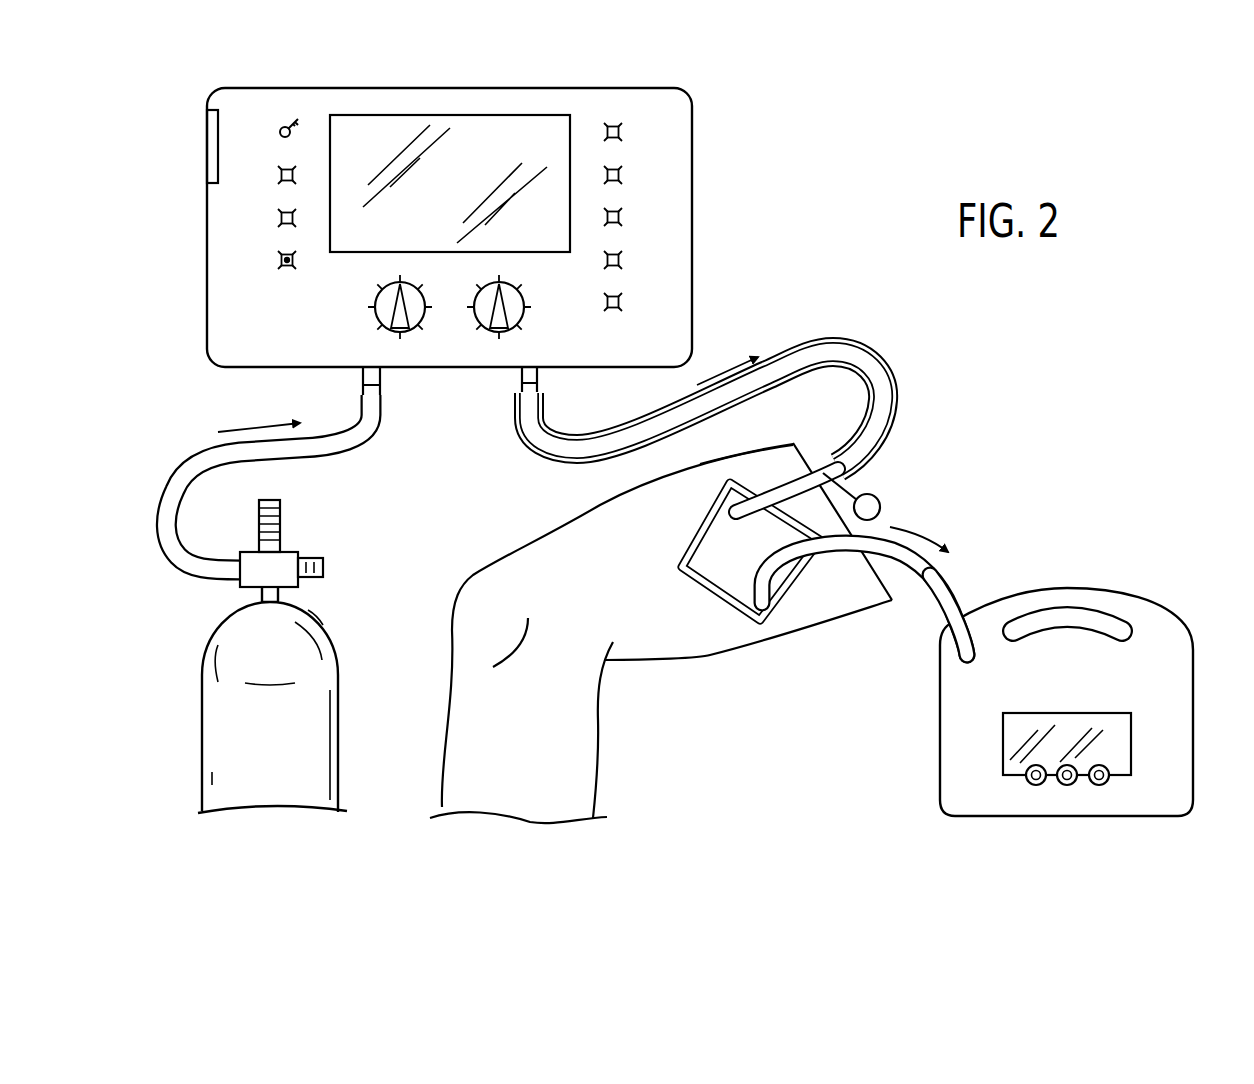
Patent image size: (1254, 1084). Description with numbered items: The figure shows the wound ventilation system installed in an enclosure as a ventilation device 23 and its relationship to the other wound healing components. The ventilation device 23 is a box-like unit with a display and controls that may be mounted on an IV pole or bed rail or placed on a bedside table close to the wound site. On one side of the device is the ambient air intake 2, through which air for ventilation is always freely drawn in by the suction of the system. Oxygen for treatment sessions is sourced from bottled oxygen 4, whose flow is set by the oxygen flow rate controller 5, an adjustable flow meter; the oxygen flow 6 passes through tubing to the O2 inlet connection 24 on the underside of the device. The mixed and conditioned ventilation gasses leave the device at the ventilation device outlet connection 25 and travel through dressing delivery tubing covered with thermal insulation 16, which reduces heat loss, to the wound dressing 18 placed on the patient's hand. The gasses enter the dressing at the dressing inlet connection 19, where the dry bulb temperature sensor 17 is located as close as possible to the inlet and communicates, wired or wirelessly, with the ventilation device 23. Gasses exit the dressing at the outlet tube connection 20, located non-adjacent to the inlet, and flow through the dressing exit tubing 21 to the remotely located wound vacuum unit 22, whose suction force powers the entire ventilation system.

The air intake 2 is at (207, 143).
The bottled oxygen 4 is at (340, 678).
The oxygen flow rate controller 5 is at (312, 578).
The oxygen flow 6 is at (307, 455).
The thermal insulation 16 is at (900, 385).
The dry bulb temperature sensor 17 is at (878, 498).
The wound dressing 18 is at (683, 540).
The dressing inlet connection 19 is at (712, 503).
The outlet tube connection 20 is at (762, 600).
The dressing exit tubing 21 is at (960, 583).
The wound vacuum unit 22 is at (1065, 590).
The ventilation device 23 is at (692, 225).
The O2 inlet connection 24 is at (381, 375).
The ventilation device outlet connection 25 is at (521, 378).